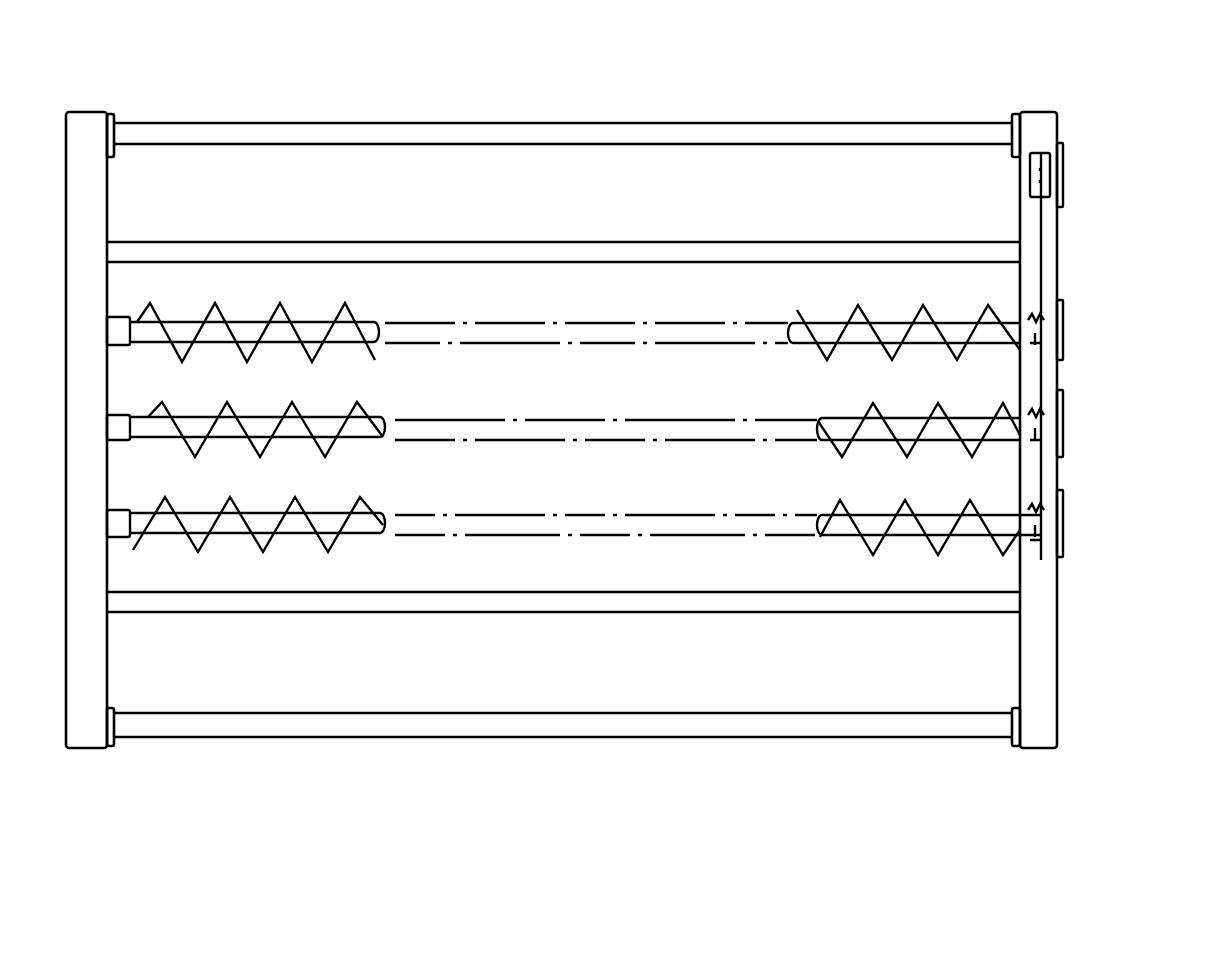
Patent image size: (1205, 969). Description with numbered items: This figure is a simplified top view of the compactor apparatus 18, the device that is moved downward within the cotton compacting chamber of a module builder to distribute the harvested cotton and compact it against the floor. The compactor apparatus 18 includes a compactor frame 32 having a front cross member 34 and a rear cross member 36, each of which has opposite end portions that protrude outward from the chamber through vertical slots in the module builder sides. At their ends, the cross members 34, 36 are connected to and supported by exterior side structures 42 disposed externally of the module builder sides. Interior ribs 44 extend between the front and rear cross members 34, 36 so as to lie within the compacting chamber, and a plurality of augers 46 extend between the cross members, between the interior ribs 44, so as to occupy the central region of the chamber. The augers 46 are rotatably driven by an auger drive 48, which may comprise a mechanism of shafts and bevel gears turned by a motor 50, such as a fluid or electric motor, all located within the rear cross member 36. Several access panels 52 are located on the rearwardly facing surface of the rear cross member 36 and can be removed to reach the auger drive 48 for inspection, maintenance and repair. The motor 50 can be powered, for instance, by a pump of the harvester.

The compactor apparatus 18 is at (1090, 82).
The compactor frame 32 is at (368, 122).
The front cross member 34 is at (88, 112).
The rear cross member 36 is at (1030, 112).
The exterior side structures 42 is at (652, 122).
The interior ribs 44 is at (553, 242).
The augers 46 is at (348, 306).
The auger drive 48 is at (1042, 224).
The motor 50 is at (1040, 162).
The access panels 52 is at (1063, 332).